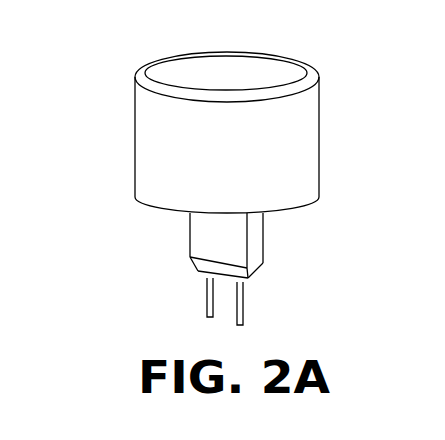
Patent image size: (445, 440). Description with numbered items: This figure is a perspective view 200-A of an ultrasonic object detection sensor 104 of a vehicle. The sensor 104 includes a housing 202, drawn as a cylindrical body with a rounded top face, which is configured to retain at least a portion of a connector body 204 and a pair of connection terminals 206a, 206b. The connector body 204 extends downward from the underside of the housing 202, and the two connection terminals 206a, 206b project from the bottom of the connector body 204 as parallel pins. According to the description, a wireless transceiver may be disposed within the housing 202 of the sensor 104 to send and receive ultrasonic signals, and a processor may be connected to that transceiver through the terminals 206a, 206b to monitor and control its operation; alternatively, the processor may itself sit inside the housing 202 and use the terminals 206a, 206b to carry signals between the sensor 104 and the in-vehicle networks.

The perspective view 200-A is at (84, 77).
The ultrasonic sensor 104 is at (361, 115).
The housing 202 is at (238, 52).
The connector body 204 is at (263, 245).
The connection terminal 206a is at (208, 305).
The connection terminal 206b is at (243, 310).